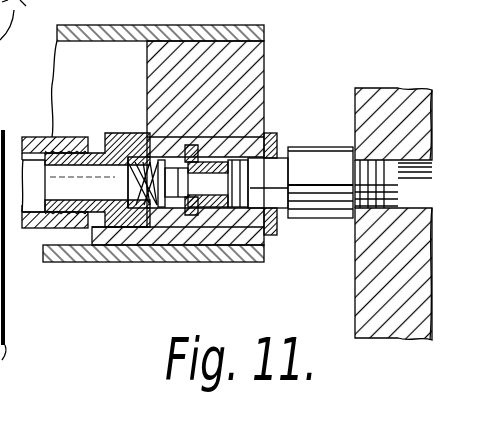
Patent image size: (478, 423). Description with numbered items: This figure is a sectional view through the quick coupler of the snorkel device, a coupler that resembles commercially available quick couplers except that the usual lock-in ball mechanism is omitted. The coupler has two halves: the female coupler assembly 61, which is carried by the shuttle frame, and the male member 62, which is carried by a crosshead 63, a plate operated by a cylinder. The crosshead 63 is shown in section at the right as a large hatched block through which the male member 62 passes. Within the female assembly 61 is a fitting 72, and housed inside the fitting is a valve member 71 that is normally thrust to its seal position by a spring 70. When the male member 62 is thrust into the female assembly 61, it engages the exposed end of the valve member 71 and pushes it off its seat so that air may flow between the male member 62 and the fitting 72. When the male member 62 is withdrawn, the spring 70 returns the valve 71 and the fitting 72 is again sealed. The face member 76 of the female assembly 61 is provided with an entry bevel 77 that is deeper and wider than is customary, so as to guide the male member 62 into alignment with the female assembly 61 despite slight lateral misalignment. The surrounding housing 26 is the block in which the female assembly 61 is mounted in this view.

The valve block housing 26 is at (270, 47).
The female coupler assembly 61 is at (98, 262).
The male member 62 is at (273, 190).
The crosshead 63 is at (360, 287).
The spring 70 is at (137, 158).
The valve member 71 is at (179, 210).
The fitting 72 is at (119, 262).
The face member 76 is at (271, 130).
The entry bevel 77 is at (286, 148).